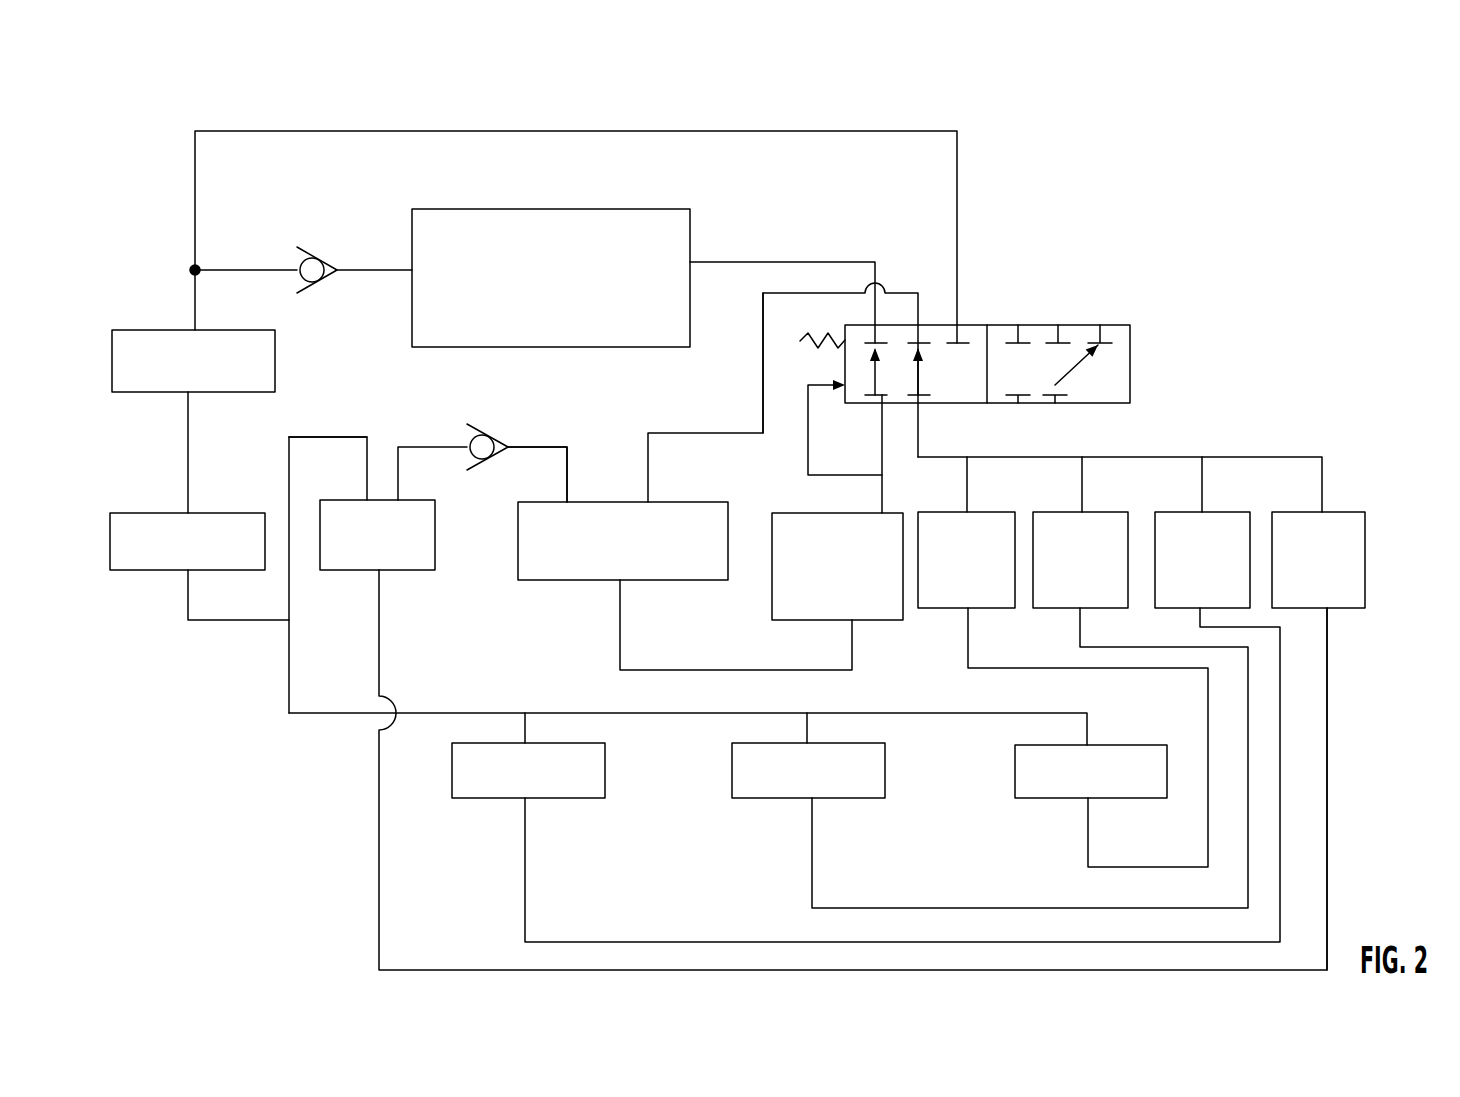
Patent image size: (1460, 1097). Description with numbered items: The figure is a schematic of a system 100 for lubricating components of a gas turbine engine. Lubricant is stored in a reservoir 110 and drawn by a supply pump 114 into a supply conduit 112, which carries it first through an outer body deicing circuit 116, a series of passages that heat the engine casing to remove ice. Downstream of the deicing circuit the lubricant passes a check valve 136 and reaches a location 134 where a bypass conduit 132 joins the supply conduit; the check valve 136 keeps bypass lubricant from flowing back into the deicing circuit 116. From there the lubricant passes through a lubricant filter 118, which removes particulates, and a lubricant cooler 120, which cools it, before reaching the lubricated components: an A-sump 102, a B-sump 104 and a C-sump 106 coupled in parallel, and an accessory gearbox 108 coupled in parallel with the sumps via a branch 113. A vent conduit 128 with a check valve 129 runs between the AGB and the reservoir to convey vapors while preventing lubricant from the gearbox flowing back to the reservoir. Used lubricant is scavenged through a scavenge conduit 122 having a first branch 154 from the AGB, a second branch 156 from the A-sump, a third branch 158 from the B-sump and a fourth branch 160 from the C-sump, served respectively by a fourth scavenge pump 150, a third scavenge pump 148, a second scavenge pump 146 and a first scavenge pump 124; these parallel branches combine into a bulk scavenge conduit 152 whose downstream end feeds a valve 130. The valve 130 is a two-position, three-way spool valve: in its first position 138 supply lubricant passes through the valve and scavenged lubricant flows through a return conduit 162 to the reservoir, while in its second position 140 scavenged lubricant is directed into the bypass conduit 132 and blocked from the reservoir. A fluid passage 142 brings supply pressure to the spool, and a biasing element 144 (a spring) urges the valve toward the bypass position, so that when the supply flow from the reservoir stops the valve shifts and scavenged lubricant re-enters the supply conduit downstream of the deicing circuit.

The system 100 is at (168, 140).
The A-sump 102 is at (562, 798).
The B-sump 104 is at (730, 775).
The C-sump 106 is at (1015, 785).
The accessory gearbox 108 is at (410, 570).
The reservoir 110 is at (518, 538).
The supply conduit 112 is at (195, 312).
The branch 113 is at (347, 437).
The supply pump 114 is at (810, 620).
The outer body deicing circuit 116 is at (587, 209).
The lubricant filter 118 is at (275, 370).
The lubricant cooler 120 is at (160, 570).
The scavenge conduit 122 is at (757, 357).
The first scavenge pump 124 is at (983, 510).
The vent conduit 128 is at (550, 445).
The check valve 129 is at (503, 430).
The valve 130 is at (1030, 285).
The bypass conduit 132 is at (845, 131).
The location 134 is at (195, 268).
The check valve 136 is at (322, 234).
The first position 138 is at (947, 393).
The second position 140 is at (1117, 380).
The fluid passage 142 is at (808, 453).
The biasing element 144 is at (845, 334).
The second scavenge pump 146 is at (1097, 512).
The third scavenge pump 148 is at (1230, 512).
The fourth scavenge pump 150 is at (1365, 522).
The bulk scavenge conduit 152 is at (1190, 457).
The first branch 154 is at (379, 877).
The second branch 156 is at (680, 942).
The third branch 158 is at (940, 908).
The fourth branch 160 is at (1115, 668).
The return conduit 162 is at (717, 433).